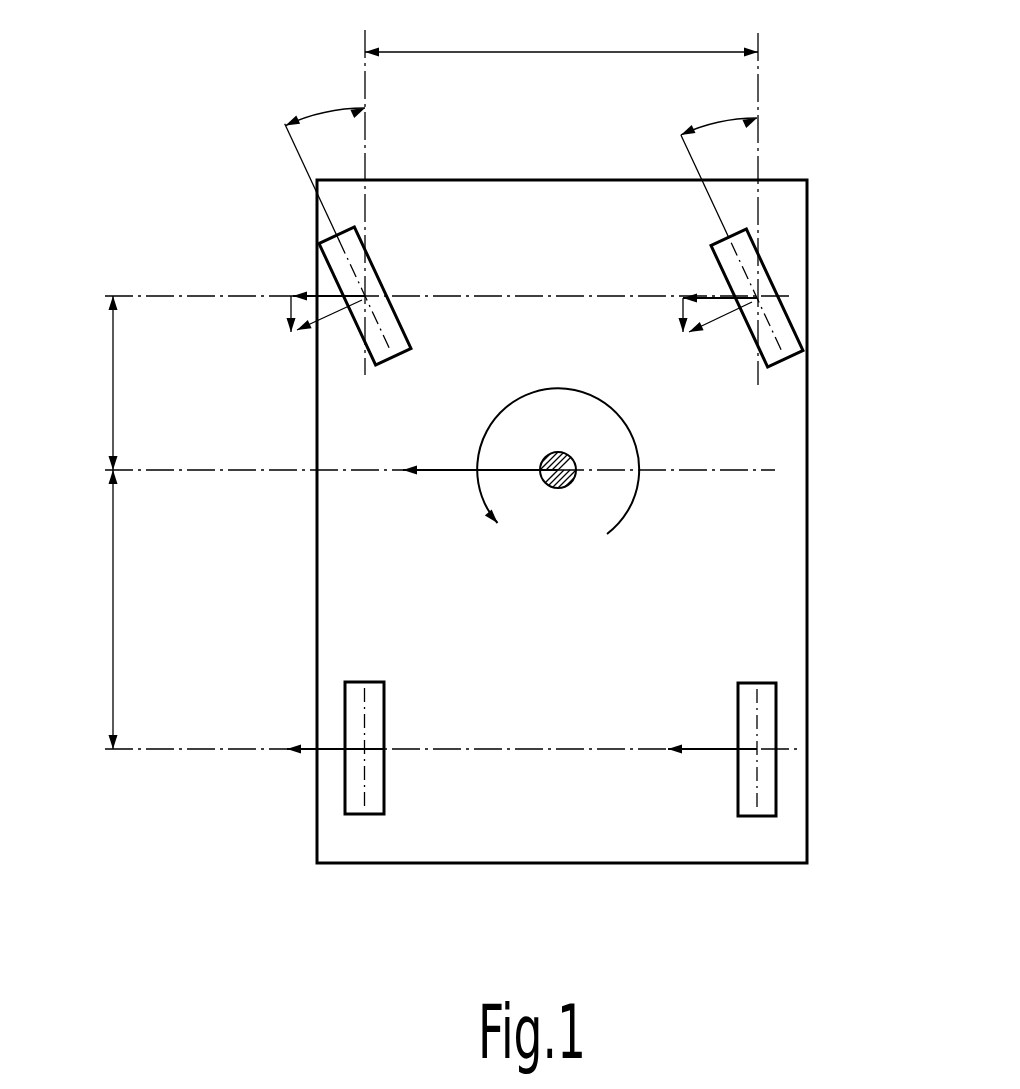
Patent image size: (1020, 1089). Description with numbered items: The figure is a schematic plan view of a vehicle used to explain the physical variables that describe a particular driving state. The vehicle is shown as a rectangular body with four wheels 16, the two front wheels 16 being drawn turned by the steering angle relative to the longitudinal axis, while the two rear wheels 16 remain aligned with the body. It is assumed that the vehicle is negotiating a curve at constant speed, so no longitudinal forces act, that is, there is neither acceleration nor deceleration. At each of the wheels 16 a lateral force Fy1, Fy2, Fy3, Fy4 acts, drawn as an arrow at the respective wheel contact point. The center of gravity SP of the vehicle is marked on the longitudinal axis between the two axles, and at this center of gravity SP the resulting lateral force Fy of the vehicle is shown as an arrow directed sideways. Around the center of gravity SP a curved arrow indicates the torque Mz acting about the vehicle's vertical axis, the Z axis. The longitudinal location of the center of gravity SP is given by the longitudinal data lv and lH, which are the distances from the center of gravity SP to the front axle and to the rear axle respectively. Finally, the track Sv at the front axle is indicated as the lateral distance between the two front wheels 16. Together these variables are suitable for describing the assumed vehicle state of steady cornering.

The wheels 16 is at (320, 243).
The lateral force at wheel Fy1 is at (312, 340).
The lateral force at wheel Fy2 is at (718, 341).
The lateral force at wheel Fy3 is at (712, 725).
The lateral force at wheel Fy4 is at (309, 725).
The lateral force at center of gravity Fy is at (480, 450).
The torque about vehicle's vertical axis Mz is at (558, 440).
The center of gravity SP is at (561, 448).
The track at front axle Sv is at (561, 30).
The longitudinal datum regarding location of center of gravity lv is at (92, 383).
The longitudinal datum regarding location of center of gravity lH is at (94, 609).